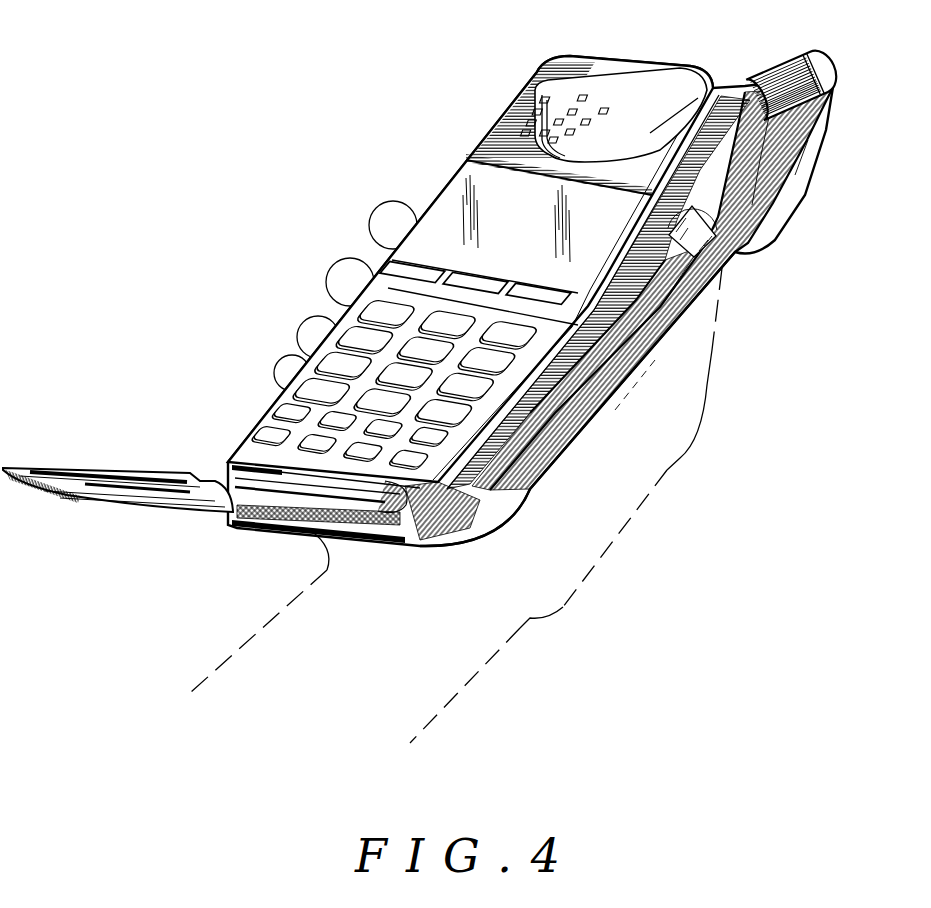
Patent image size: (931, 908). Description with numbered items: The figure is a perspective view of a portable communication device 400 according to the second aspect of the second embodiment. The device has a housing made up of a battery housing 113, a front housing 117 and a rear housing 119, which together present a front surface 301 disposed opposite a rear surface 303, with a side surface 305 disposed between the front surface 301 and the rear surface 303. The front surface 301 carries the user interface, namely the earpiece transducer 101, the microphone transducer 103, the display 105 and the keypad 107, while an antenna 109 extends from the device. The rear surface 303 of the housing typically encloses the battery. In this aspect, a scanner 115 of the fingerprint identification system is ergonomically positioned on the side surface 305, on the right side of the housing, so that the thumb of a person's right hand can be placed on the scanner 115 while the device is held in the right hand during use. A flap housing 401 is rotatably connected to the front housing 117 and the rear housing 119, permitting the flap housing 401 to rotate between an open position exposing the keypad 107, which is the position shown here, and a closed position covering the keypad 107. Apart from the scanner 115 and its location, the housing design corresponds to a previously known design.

The earpiece transducer 101 is at (627, 82).
The microphone transducer 103 is at (433, 540).
The display 105 is at (453, 187).
The keypad 107 is at (350, 335).
The antenna 109 is at (790, 62).
The battery housing 113 is at (574, 440).
The scanner 115 is at (704, 232).
The front housing 117 is at (490, 527).
The rear housing 119 is at (518, 497).
The front surface 301 is at (296, 406).
The rear surface 303 is at (695, 322).
The side surface 305 is at (790, 151).
The portable communication device 400 is at (729, 692).
The flap housing 401 is at (226, 517).